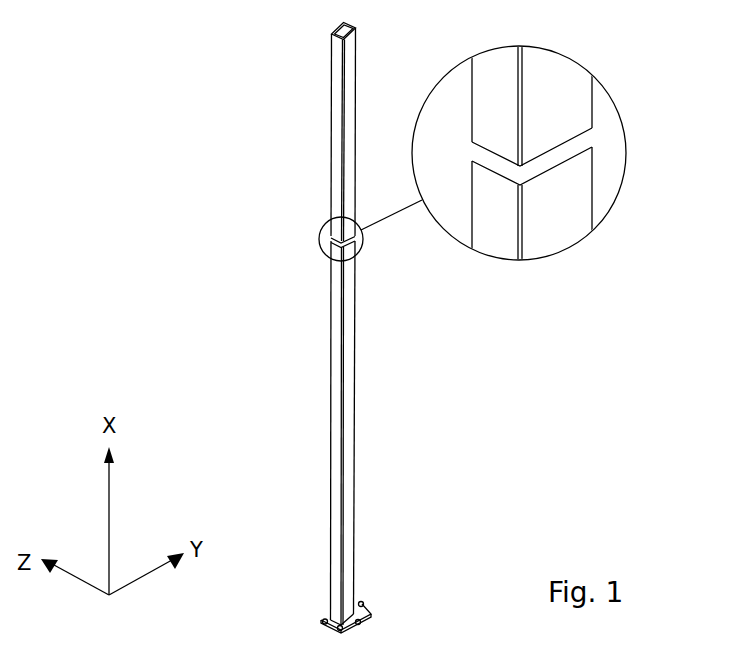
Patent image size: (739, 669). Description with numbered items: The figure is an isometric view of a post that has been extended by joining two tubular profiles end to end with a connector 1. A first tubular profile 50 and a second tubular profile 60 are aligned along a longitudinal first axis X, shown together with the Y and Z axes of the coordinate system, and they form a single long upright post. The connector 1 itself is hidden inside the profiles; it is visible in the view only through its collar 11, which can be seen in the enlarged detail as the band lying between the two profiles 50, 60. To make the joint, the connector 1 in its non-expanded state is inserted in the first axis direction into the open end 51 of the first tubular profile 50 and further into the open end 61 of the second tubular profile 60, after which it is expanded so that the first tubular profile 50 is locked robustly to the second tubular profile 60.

The connector 1 is at (528, 188).
The collar 11 is at (582, 147).
The first tubular profile 50 is at (353, 490).
The open end of the first tubular profile 51 is at (336, 253).
The second tubular profile 60 is at (335, 126).
The open end of the second tubular profile 61 is at (335, 237).